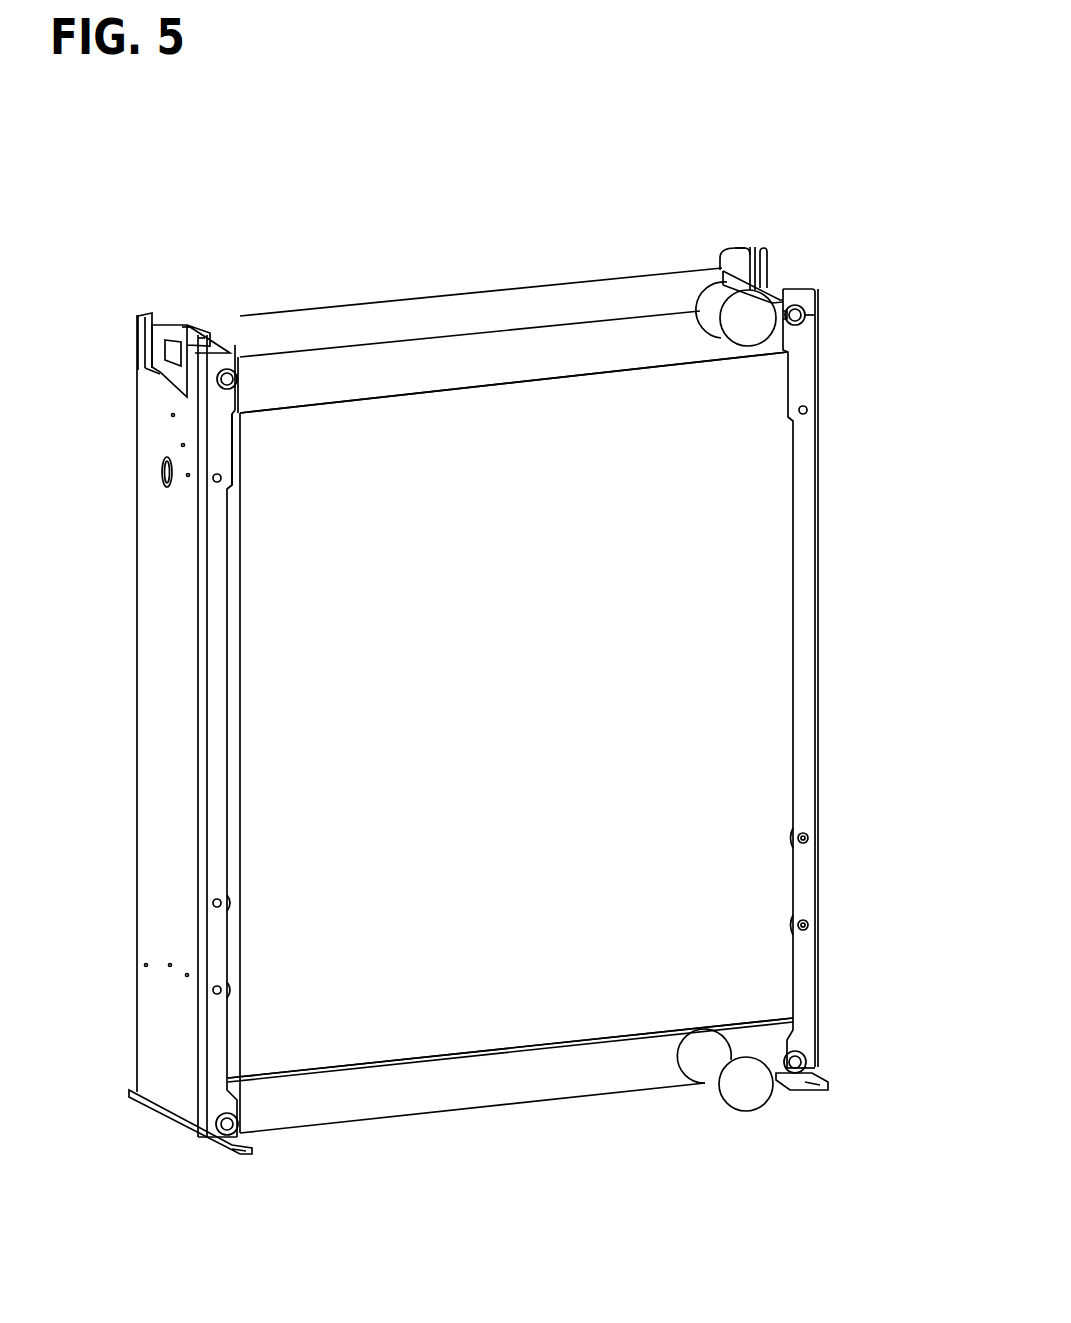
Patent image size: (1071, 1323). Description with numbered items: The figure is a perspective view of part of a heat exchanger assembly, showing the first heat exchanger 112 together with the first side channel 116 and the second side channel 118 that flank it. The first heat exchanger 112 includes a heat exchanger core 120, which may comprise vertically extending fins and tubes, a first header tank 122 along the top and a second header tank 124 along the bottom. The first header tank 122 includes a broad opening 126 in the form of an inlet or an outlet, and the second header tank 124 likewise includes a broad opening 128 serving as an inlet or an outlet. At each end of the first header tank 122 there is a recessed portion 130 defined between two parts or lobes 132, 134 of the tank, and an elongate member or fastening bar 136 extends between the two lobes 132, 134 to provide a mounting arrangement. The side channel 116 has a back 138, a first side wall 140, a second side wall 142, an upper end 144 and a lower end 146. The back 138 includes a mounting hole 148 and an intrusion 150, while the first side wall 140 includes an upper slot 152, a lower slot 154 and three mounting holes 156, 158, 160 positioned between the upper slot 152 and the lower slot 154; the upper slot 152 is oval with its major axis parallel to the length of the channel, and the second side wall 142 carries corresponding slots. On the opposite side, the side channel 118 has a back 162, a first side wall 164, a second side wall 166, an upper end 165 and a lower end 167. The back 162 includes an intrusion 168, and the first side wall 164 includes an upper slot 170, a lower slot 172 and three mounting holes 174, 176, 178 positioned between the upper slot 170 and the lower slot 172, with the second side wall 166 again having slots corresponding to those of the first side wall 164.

The first heat exchanger 112 is at (730, 652).
The first side channel 116 is at (160, 820).
The second side channel 118 is at (800, 596).
The heat exchanger core 120 is at (745, 728).
The first header tank 122 is at (500, 345).
The second header tank 124 is at (527, 1072).
The broad opening 126 is at (740, 328).
The broad opening 128 is at (737, 1072).
The recessed portion 130 is at (205, 343).
The lobe 132 is at (188, 328).
The lobe 134 is at (783, 302).
The fastening bar 136 is at (767, 262).
The back 138 is at (166, 737).
The first side wall 140 is at (213, 1062).
The second side wall 142 is at (140, 312).
The upper end 144 is at (138, 330).
The intrusion 150 is at (170, 373).
The upper slot 152 is at (230, 370).
The lower slot 154 is at (226, 1133).
The mounting hole 148 is at (163, 478).
The mounting hole 156 is at (217, 482).
The mounting hole 158 is at (216, 905).
The mounting hole 160 is at (216, 993).
The lower end 146 is at (176, 1125).
The back 162 is at (815, 556).
The first side wall 164 is at (800, 482).
The upper end 165 is at (740, 247).
The second side wall 166 is at (722, 250).
The lower end 167 is at (810, 1070).
The intrusion 168 is at (797, 278).
The upper slot 170 is at (798, 325).
The lower slot 172 is at (799, 1048).
The mounting hole 174 is at (806, 414).
The mounting hole 176 is at (808, 838).
The mounting hole 178 is at (808, 925).